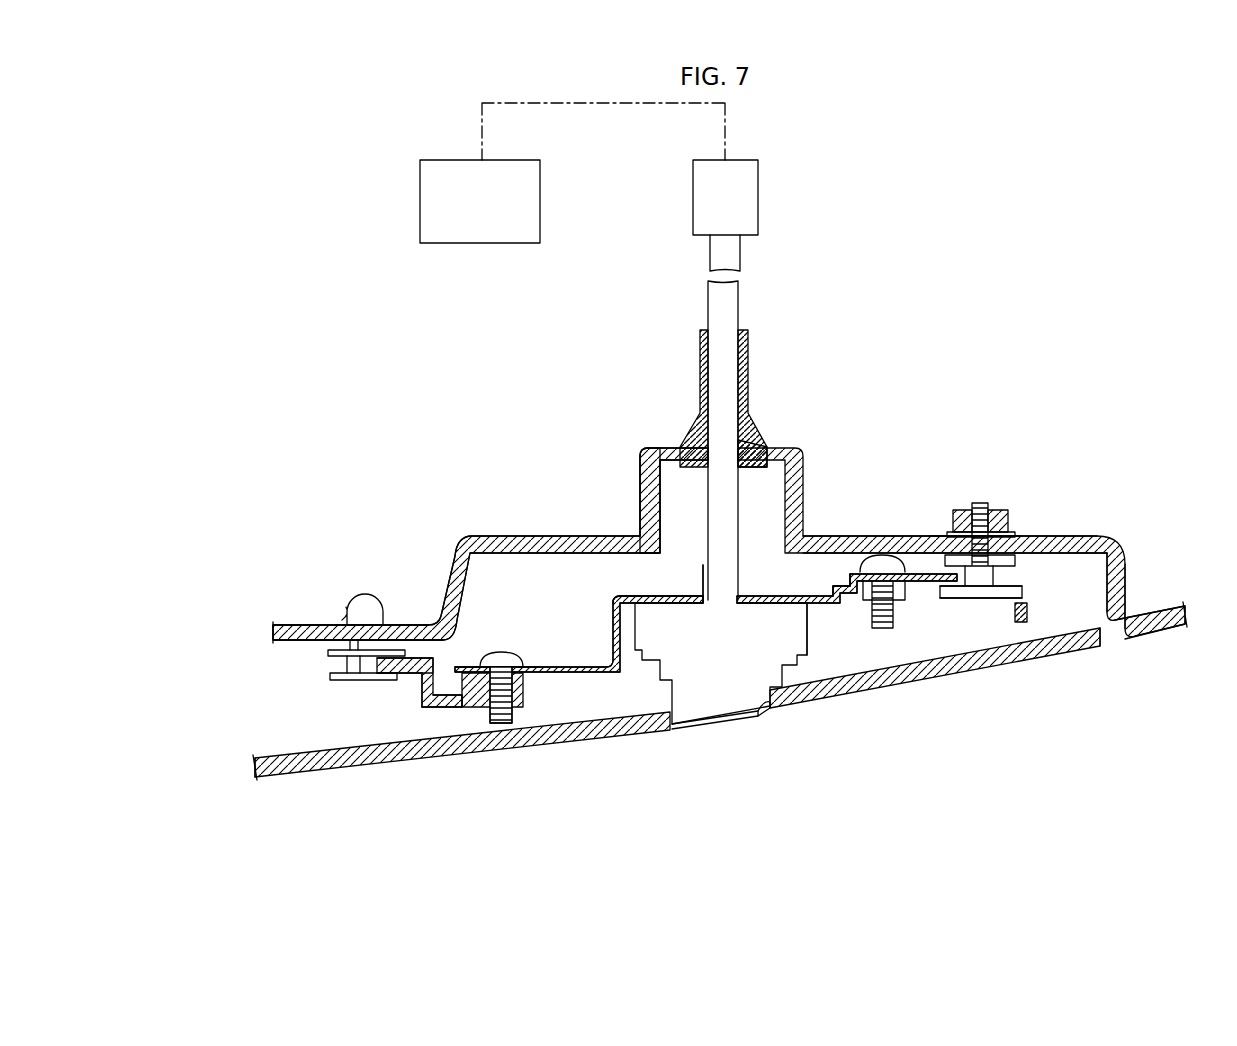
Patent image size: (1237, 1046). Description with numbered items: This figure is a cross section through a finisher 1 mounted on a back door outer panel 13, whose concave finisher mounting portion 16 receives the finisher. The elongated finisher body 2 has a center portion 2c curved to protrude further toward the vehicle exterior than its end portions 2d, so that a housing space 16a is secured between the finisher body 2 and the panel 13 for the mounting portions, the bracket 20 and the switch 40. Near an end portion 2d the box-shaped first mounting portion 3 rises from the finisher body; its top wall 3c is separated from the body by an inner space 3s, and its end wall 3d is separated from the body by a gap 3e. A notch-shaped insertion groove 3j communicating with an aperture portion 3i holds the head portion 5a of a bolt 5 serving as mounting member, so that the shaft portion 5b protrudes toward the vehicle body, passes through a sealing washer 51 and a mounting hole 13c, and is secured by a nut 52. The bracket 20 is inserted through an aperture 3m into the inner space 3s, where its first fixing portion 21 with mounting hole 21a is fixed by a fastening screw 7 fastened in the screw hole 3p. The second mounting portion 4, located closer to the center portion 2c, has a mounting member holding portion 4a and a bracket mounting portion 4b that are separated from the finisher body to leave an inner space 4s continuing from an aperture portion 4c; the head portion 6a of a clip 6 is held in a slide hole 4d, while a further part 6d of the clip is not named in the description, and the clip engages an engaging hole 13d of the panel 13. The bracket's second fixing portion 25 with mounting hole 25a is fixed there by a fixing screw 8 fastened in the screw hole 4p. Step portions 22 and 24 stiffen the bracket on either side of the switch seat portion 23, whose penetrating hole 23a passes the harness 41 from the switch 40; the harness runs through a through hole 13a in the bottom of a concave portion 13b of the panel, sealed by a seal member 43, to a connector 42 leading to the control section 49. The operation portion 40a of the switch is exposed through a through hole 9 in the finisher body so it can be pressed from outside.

The finisher 1 is at (940, 288).
The finisher body 2 is at (308, 775).
The center portion 2c is at (277, 770).
The end portion 2d is at (1100, 648).
The first mounting portion 3 is at (840, 558).
The top wall 3c is at (913, 565).
The end wall 3d is at (1028, 610).
The gap 3e is at (1023, 632).
The aperture portion 3i is at (1035, 578).
The insertion groove 3j is at (973, 618).
The aperture 3m is at (863, 660).
The screw hole 3p is at (865, 536).
The inner space 3s is at (944, 649).
The second mounting portion 4 is at (405, 688).
The mounting member holding portion 4a is at (413, 660).
The bracket mounting portion 4b is at (475, 707).
The aperture portion 4c is at (380, 720).
The slide hole 4d is at (377, 685).
The screw hole 4p is at (489, 693).
The inner space 4s is at (446, 744).
The mounting member 5 is at (1012, 650).
The head portion 5a is at (1030, 636).
The shaft portion 5b is at (980, 500).
The clip 6 is at (306, 663).
The head portion 6a is at (342, 667).
The fixing dome 6d is at (365, 598).
The fastening member 7 is at (883, 640).
The fixing member 8 is at (505, 652).
The through hole 9 is at (759, 718).
The back door outer panel 13 is at (1155, 622).
The through hole 13a is at (757, 447).
The concave portion 13b is at (657, 505).
The mounting hole 13c is at (943, 536).
The engaging hole 13d is at (350, 625).
The finisher mounting portion 16 is at (495, 548).
The housing space 16a is at (543, 575).
The bracket 20 is at (614, 688).
The first fixing portion 21 is at (912, 586).
The mounting hole 21a is at (868, 611).
The step portion 22 is at (833, 590).
The switch seat portion 23 is at (697, 717).
The penetrating hole 23a is at (712, 600).
The step portion 24 is at (613, 627).
The second fixing portion 25 is at (557, 673).
The mounting hole 25a is at (508, 657).
The switch 40 is at (693, 705).
The operation portion 40a is at (722, 722).
The harness 41 is at (733, 293).
The connector 42 is at (750, 190).
The seal member 43 is at (748, 350).
The control section 49 is at (461, 232).
The sealing washer 51 is at (1012, 531).
The nut 52 is at (1000, 510).